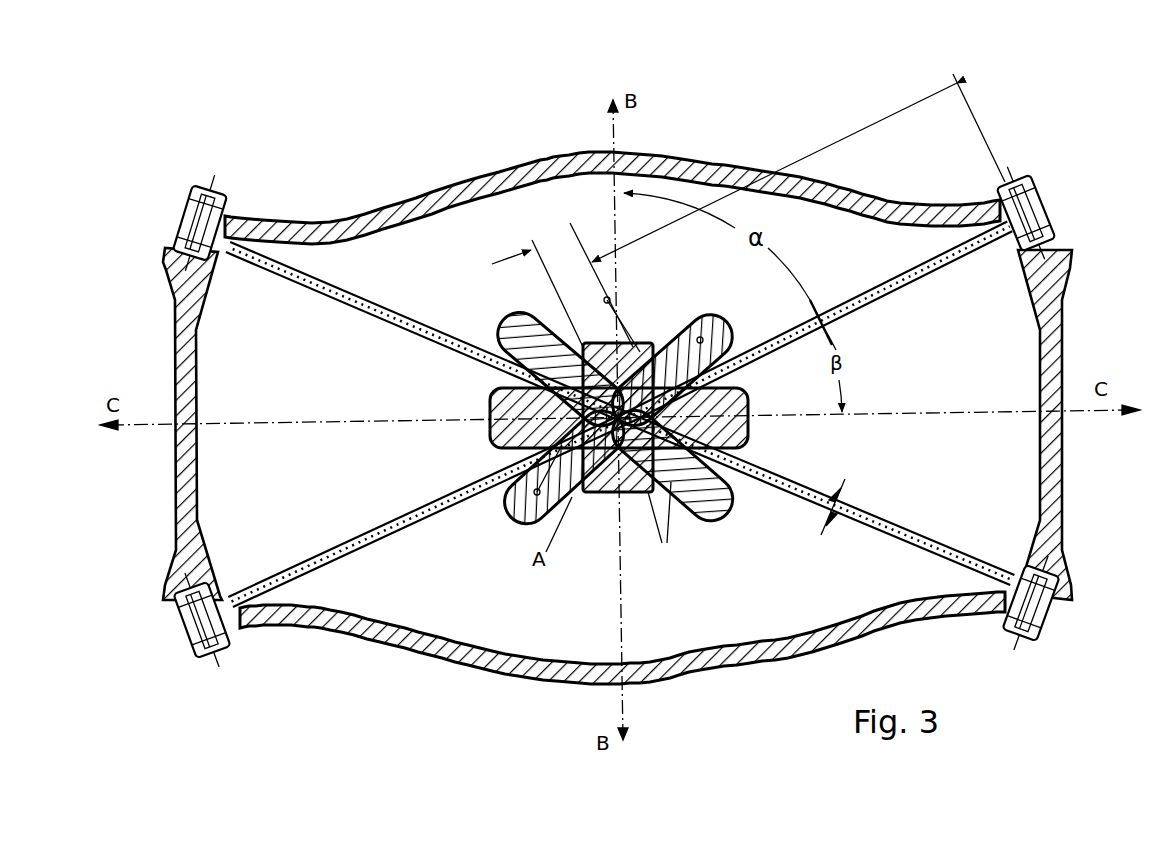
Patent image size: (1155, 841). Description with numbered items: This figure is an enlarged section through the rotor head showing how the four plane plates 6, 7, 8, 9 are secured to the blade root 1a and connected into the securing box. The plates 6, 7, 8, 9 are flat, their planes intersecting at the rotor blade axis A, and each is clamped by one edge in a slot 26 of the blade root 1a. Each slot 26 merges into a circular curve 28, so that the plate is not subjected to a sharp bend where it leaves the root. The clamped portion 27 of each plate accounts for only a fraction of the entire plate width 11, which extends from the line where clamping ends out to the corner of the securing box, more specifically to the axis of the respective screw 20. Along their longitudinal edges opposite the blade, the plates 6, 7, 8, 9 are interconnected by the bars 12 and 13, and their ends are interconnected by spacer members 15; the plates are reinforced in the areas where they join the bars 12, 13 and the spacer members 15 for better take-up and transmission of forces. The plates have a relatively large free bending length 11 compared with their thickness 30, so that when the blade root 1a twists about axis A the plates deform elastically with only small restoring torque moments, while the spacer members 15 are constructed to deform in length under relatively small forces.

The blade root 1a is at (628, 482).
The plane plate 6 is at (895, 296).
The plane plate 7 is at (378, 306).
The plane plate 8 is at (868, 515).
The plane plate 9 is at (431, 522).
The plate width 11 is at (798, 168).
The bar 12 is at (177, 342).
The bar 13 is at (1060, 310).
The spacer member 15 is at (636, 157).
The screw 20 is at (1040, 185).
The slot 26 is at (662, 523).
The clamped portion 27 is at (562, 285).
The circular curve 28 is at (618, 396).
The plate thickness 30 is at (826, 496).